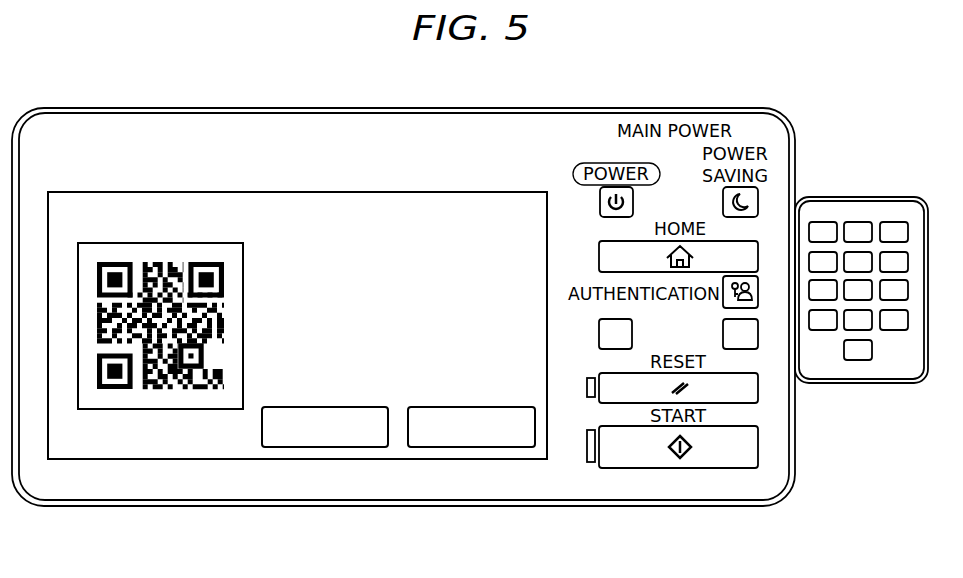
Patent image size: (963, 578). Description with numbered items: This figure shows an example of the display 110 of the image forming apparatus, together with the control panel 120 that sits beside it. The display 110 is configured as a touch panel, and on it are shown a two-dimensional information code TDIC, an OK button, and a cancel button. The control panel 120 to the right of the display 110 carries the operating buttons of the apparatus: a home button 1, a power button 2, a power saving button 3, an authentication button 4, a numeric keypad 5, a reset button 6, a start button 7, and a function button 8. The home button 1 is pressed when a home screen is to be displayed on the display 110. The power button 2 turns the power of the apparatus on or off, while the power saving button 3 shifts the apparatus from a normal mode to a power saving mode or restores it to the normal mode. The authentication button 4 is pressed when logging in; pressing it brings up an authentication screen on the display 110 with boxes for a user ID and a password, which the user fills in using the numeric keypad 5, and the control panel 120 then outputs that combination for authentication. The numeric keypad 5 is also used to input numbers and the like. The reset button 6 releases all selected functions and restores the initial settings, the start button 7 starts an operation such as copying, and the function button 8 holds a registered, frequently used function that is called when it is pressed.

The home button 1 is at (599, 258).
The power button 2 is at (600, 200).
The power saving button 3 is at (757, 197).
The authentication button 4 is at (758, 292).
The numeric keypad 5 is at (861, 210).
The reset button 6 is at (748, 388).
The start button 7 is at (752, 450).
The function button 8 is at (632, 320).
The display 110 is at (387, 317).
The control panel 120 is at (803, 554).
The two-dimensional information code TDIC is at (155, 409).